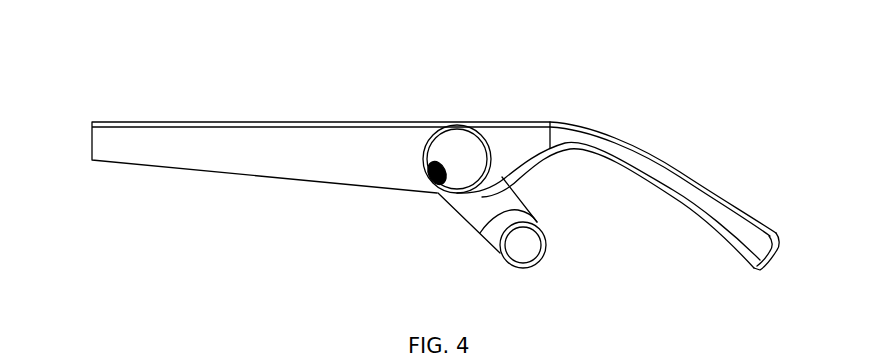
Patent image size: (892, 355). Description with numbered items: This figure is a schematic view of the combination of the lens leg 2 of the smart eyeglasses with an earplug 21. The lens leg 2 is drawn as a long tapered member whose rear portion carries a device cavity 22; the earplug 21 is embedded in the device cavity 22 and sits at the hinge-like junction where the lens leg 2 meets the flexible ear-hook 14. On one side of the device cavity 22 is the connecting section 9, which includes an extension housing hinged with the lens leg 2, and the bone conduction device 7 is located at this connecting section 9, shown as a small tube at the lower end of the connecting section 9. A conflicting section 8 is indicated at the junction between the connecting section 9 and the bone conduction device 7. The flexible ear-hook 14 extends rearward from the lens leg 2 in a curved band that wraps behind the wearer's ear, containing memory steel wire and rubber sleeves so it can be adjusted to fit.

The lens leg 2 is at (168, 122).
The earplug 21 is at (450, 145).
The device cavity 22 is at (430, 178).
The flexible ear-hook 14 is at (707, 210).
The connecting section 9 is at (470, 207).
The conflicting section 8 is at (495, 232).
The bone conduction device 7 is at (530, 240).